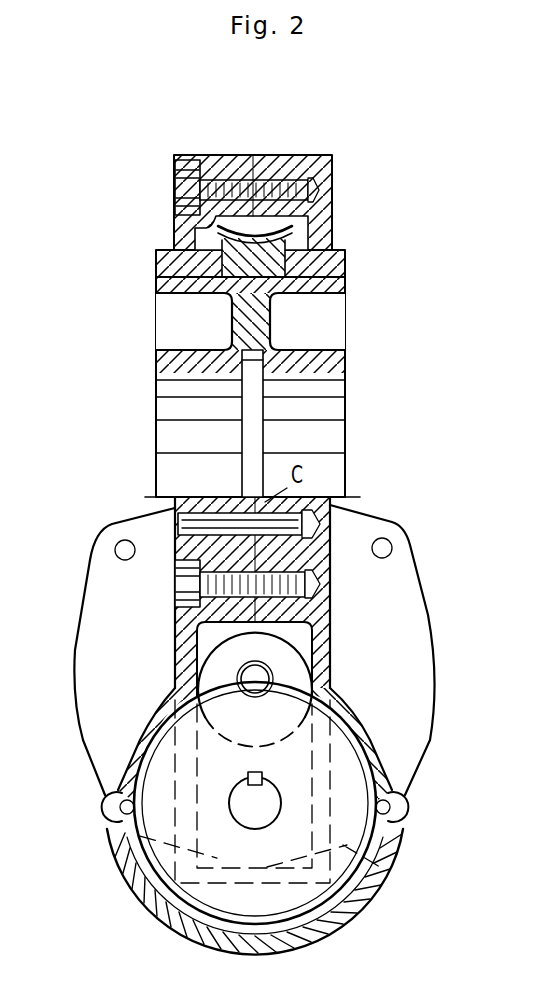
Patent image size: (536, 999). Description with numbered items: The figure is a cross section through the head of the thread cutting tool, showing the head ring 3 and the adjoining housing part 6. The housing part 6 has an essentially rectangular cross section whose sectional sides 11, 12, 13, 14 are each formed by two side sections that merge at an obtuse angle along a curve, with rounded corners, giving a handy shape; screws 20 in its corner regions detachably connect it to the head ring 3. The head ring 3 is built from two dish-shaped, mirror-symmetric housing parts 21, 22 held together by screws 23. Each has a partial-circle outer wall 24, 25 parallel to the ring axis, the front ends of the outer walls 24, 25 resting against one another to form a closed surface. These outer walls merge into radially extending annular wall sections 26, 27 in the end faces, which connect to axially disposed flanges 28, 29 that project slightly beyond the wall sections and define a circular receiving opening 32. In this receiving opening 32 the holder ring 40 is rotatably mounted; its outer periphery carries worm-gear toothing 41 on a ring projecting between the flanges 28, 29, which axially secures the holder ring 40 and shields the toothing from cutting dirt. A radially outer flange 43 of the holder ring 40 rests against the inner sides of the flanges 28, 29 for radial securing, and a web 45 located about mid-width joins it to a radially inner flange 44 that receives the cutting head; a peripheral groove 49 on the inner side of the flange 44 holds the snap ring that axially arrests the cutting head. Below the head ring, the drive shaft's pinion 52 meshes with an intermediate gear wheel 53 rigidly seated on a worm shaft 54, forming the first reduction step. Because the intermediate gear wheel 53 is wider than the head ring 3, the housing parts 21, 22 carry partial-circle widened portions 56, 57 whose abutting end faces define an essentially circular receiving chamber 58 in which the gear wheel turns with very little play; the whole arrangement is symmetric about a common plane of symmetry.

The head ring 3 is at (361, 322).
The housing part 6 is at (413, 620).
The sectional side 11 is at (418, 578).
The sectional side 12 is at (386, 871).
The sectional side 13 is at (77, 713).
The sectional side 14 is at (360, 510).
The screws 20 is at (122, 538).
The housing part 21 is at (358, 259).
The housing part 22 is at (143, 258).
The screws 23 is at (203, 578).
The outer wall 24 is at (262, 165).
The outer wall 25 is at (212, 156).
The annular wall section 26 is at (322, 233).
The annular wall section 27 is at (187, 237).
The flange 28 is at (327, 263).
The flange 29 is at (155, 263).
The receiving opening 32 is at (165, 285).
The holder ring 40 is at (359, 362).
The worm-gear toothing 41 is at (303, 215).
The flange 43 is at (190, 288).
The flange 44 is at (162, 365).
The web 45 is at (258, 313).
The peripheral groove 49 is at (256, 448).
The pinion 52 is at (273, 665).
The intermediate gear wheel 53 is at (333, 743).
The worm shaft 54 is at (261, 795).
The widened portion 56 is at (393, 753).
The widened portion 57 is at (126, 745).
The receiving chamber 58 is at (337, 913).